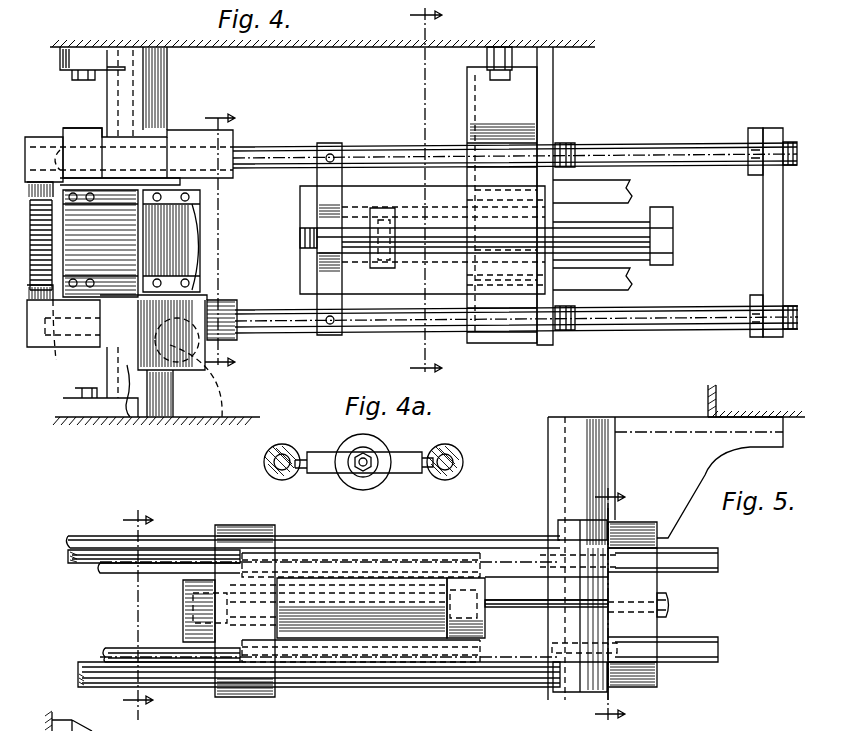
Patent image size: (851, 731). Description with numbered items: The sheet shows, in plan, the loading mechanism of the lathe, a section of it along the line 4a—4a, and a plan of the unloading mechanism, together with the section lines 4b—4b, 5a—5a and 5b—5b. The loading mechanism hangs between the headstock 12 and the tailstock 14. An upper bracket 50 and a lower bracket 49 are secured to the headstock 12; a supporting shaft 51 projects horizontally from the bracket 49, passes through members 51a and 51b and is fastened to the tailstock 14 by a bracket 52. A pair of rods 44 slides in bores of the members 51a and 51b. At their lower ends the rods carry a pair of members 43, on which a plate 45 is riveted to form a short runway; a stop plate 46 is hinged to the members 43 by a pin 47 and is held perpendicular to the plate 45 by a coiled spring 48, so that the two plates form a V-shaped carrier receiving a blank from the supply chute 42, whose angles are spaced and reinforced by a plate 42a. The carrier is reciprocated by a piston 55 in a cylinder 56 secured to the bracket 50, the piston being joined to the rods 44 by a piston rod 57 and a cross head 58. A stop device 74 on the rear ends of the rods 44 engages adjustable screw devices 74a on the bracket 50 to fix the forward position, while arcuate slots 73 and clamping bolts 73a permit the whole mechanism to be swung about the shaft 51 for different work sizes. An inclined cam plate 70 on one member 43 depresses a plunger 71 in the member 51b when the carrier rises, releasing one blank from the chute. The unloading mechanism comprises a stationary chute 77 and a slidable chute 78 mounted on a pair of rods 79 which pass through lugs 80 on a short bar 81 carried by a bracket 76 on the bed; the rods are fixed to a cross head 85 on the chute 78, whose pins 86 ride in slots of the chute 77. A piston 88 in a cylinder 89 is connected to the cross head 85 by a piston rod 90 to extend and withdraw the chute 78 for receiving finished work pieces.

In FIG. 4, the headstock 12 is at (343, 48).
In FIG. 4, the tailstock 14 is at (188, 420).
In FIG. 4, the supply chute 42 is at (268, 275).
In FIG. 4, the plate 42a is at (186, 240).
In FIG. 4, the members 43 is at (90, 128).
In FIG. 4A, the members 43 is at (290, 444).
In FIG. 4, the rods 44 is at (655, 146).
In FIG. 4A, the rods 44 is at (275, 458).
In FIG. 4, the plate 45 is at (100, 243).
In FIG. 4, the stop member or plate 46 is at (48, 160).
In FIG. 4, the pin 47 is at (56, 347).
In FIG. 4, the coiled spring 48 is at (30, 290).
In FIG. 4, the lower bracket 49 is at (158, 98).
In FIG. 4, the upper bracket 50 is at (553, 100).
In FIG. 4, the supporting shaft 51 is at (140, 70).
In FIG. 4, the member 51a is at (175, 137).
In FIG. 4, the member 51b is at (130, 417).
In FIG. 4, the bracket 52 is at (165, 396).
In FIG. 4, the piston 55 is at (630, 230).
In FIG. 4, the cylinder 56 is at (640, 262).
In FIG. 4A, the cylinder 56 is at (384, 482).
In FIG. 4, the piston rod 57 is at (362, 238).
In FIG. 4A, the piston rod 57 is at (356, 452).
In FIG. 4, the cross head 58 is at (320, 200).
In FIG. 4A, the cross head 58 is at (404, 452).
In FIG. 4, the inclined cam plate 70 is at (205, 350).
In FIG. 4, the plunger 71 is at (224, 417).
In FIG. 4, the arcuate slots 73 is at (487, 66).
In FIG. 4, the clamping bolts 73a is at (500, 80).
In FIG. 4, the stop device 74 is at (772, 240).
In FIG. 4, the adjustable screw devices 74a is at (578, 150).
In FIG. 5, the bracket 76 is at (680, 495).
In FIG. 5, the stationary chute 77 is at (104, 573).
In FIG. 5, the slidable chute 78 is at (715, 637).
In FIG. 5, the rods 79 is at (316, 536).
In FIG. 5, the lugs 80 is at (558, 525).
In FIG. 5, the short bar 81 is at (575, 584).
In FIG. 5, the cross head 85 is at (668, 612).
In FIG. 5, the pins 86 is at (272, 530).
In FIG. 5, the piston 88 is at (185, 612).
In FIG. 5, the cylinder 89 is at (340, 638).
In FIG. 5, the piston rod 90 is at (540, 612).
In FIG. 4, the section line 4a— 4a is at (224, 241).
In FIG. 4, the section line 4b— 4b is at (416, 190).
In FIG. 5, the section line 5a— 5a is at (622, 603).
In FIG. 5, the section line 5b— 5b is at (138, 608).